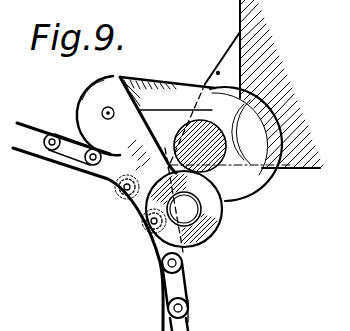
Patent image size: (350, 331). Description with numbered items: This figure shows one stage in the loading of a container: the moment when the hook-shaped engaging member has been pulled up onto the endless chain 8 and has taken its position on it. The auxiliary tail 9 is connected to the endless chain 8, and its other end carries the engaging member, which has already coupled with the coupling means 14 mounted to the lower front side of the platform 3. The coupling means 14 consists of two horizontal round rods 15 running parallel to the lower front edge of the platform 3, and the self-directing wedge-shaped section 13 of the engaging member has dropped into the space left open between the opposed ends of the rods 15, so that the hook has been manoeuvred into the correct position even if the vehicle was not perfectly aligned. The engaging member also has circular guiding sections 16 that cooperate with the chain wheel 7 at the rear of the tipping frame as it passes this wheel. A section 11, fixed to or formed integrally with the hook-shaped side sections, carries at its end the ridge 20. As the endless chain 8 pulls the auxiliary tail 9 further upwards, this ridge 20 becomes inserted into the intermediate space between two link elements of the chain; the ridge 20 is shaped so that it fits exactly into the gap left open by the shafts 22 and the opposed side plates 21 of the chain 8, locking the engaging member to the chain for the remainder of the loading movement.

The platform 3 is at (234, 17).
The chain wheel 7 is at (163, 290).
The endless chain 8 is at (192, 314).
The auxiliary tail 9 is at (108, 113).
The section 11 is at (107, 188).
The wedge-shaped section 13 is at (143, 85).
The coupling means 14 is at (218, 72).
The rods 15 is at (238, 196).
The circular guiding sections 16 is at (215, 237).
The ridge 20 is at (129, 218).
The side plates 21 is at (38, 152).
The shafts 22 is at (162, 313).